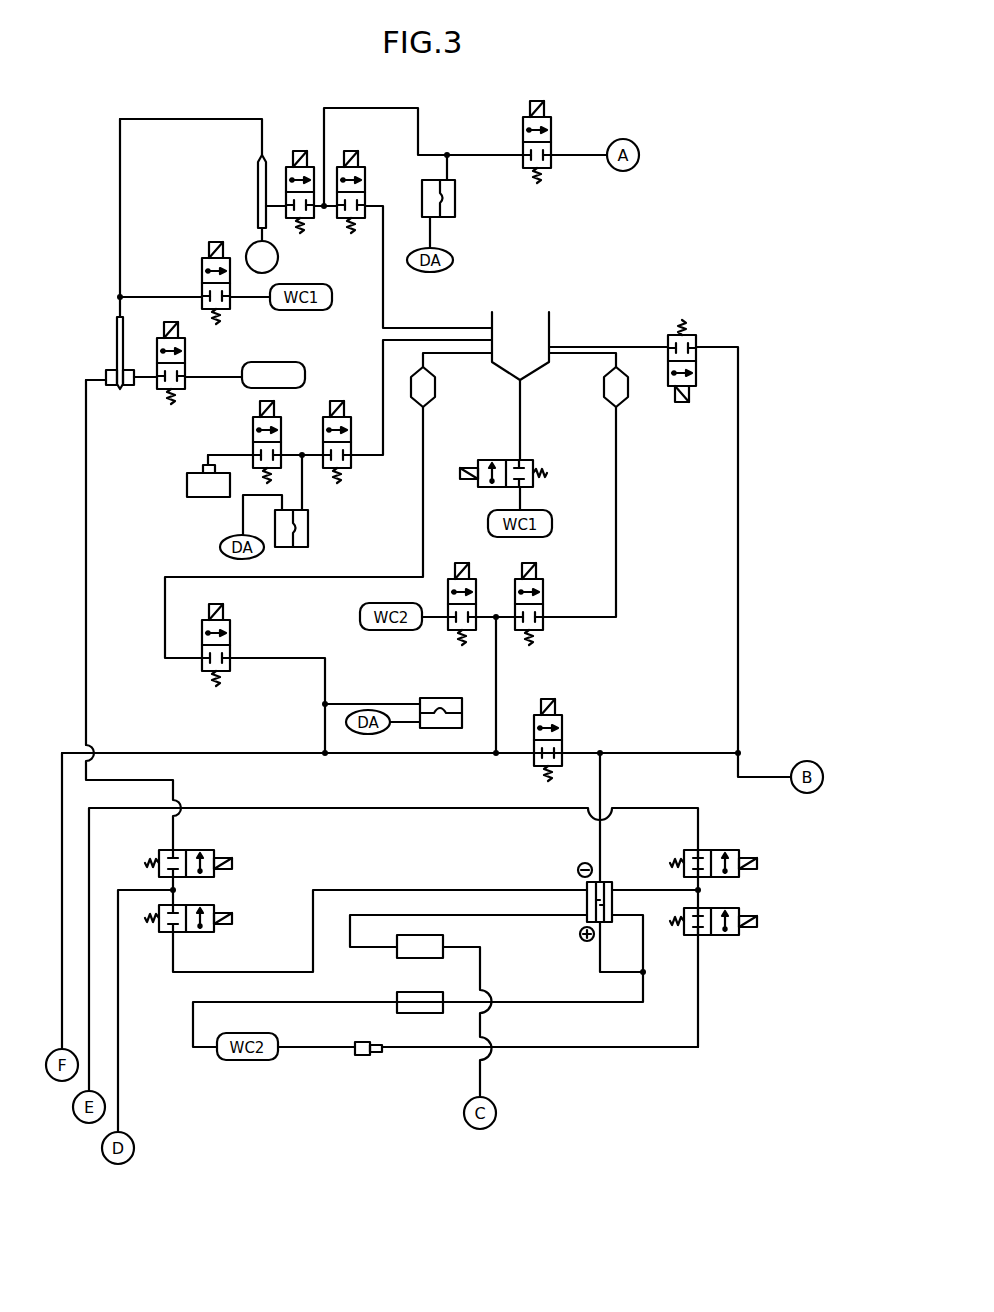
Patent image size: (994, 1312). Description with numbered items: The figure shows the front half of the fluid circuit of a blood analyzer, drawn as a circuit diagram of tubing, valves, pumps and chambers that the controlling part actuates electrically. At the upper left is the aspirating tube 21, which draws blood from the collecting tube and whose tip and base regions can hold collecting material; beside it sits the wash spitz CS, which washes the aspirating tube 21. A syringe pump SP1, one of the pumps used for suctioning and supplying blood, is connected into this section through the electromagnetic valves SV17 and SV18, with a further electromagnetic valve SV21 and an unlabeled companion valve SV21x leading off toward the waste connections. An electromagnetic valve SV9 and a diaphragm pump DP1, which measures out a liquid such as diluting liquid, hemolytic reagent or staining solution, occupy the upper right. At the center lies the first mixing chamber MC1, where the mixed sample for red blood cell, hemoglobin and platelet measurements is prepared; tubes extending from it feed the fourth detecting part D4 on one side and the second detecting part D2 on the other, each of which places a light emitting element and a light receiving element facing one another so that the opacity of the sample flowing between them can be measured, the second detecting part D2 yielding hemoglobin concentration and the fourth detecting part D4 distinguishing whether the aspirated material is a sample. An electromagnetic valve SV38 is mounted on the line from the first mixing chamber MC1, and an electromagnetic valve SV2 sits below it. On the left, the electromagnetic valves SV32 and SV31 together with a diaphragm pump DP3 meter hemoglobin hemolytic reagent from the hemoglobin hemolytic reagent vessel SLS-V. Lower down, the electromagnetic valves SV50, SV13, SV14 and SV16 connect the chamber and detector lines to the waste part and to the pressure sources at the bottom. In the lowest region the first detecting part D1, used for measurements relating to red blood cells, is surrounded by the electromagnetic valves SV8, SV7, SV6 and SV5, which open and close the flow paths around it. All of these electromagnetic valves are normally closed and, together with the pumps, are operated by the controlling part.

The aspirating tube 21 is at (117, 347).
The wash spitz CS is at (132, 385).
The syringe pump SP1 is at (258, 182).
The electromagnetic valve SV17 is at (295, 183).
The electromagnetic valve SV18 is at (358, 183).
The electromagnetic valve SV9 is at (512, 142).
The electromagnetic valve SV21 is at (205, 271).
The solenoid valve (unlabeled, WC1 line) SV21x is at (231, 363).
The diaphragm pump DP1 is at (455, 205).
The first mixing chamber MC1 is at (570, 322).
The electromagnetic valve SV38 is at (680, 376).
The fourth detecting part D4 is at (436, 385).
The second detecting part D2 is at (618, 405).
The electromagnetic valve SV2 is at (503, 464).
The electromagnetic valve SV32 is at (240, 442).
The electromagnetic valve SV31 is at (357, 451).
The diaphragm pump DP3 is at (318, 528).
The hemoglobin hemolytic reagent vessel SLS-V is at (195, 497).
The electromagnetic valve SV50 is at (210, 660).
The electromagnetic valve SV13 is at (457, 617).
The electromagnetic valve SV14 is at (531, 617).
The electromagnetic valve SV16 is at (575, 740).
The electromagnetic valve SV8 is at (200, 854).
The electromagnetic valve SV7 is at (200, 931).
The electromagnetic valve SV6 is at (724, 855).
The electromagnetic valve SV5 is at (724, 934).
The first detecting part D1 is at (610, 882).